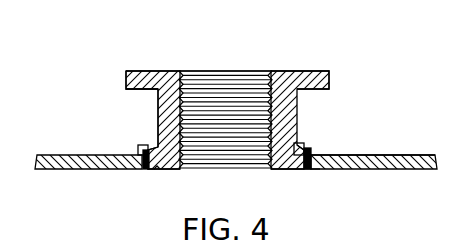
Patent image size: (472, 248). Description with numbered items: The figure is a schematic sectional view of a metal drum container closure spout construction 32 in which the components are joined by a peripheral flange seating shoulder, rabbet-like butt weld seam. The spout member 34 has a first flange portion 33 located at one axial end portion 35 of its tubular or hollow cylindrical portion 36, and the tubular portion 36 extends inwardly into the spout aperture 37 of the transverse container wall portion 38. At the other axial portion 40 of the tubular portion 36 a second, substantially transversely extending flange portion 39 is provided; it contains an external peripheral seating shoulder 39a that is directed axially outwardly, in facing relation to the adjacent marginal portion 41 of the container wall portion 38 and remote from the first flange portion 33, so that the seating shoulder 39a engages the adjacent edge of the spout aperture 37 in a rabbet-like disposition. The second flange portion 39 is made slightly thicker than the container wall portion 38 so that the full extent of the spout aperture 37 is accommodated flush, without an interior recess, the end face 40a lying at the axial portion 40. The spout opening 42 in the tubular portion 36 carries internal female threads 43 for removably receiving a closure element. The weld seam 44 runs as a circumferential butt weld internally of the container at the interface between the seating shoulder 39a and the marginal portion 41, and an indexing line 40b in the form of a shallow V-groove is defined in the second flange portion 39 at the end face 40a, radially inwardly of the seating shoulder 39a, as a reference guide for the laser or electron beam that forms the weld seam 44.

The closure spout construction 32 is at (123, 50).
The flange portion 33 is at (324, 72).
The spout member 34 is at (289, 72).
The axial end portion 35 is at (156, 97).
The tubular portion 36 is at (170, 103).
The spout aperture 37 is at (299, 143).
The container wall portion 38 is at (381, 155).
The second flange portion 39 is at (144, 147).
The seating shoulder 39a is at (306, 150).
The axial portion 40 is at (156, 127).
The end face 40a is at (291, 168).
The indexing line 40b is at (300, 168).
The marginal portion 41 is at (331, 155).
The spout opening 42 is at (218, 92).
The female threads 43 is at (182, 72).
The weld seam 44 is at (311, 168).